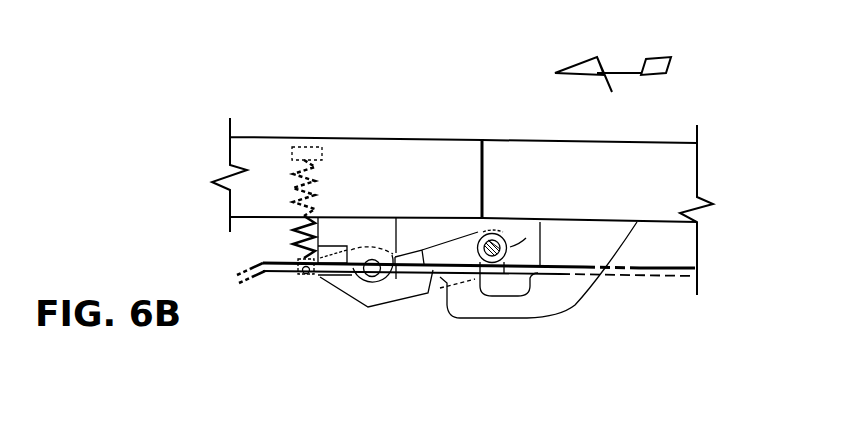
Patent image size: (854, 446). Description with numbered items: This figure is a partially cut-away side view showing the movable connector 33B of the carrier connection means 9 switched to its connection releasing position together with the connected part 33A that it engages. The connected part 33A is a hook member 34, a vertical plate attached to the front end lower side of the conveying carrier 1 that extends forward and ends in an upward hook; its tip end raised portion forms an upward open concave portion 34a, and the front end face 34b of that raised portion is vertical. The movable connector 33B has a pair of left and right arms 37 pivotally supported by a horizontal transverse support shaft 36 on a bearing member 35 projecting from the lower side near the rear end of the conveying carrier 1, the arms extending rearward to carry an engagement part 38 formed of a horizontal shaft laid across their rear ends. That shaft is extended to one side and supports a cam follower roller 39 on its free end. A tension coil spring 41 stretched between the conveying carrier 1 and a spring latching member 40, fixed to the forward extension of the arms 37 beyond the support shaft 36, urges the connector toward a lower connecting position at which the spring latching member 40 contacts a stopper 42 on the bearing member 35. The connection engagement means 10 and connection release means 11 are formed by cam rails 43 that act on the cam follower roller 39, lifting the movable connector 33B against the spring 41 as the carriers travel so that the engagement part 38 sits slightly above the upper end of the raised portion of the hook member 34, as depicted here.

The conveying carrier 1 is at (252, 137).
The carrier connection means 9 is at (477, 319).
The connected part 33A is at (483, 322).
The movable connector 33B is at (387, 312).
The connection engagement means 10 is at (466, 318).
The connection release means 11 is at (628, 282).
The hook member 34 is at (503, 305).
The upward open concave portion 34a is at (517, 272).
The front end face 34b is at (443, 291).
The bearing member 35 is at (380, 233).
The support shaft 36 is at (370, 258).
The arms 37 is at (404, 256).
The engagement part 38 is at (494, 233).
The cam follower roller 39 is at (524, 240).
The spring latching member 40 is at (298, 275).
The tension coil spring 41 is at (298, 237).
The stopper 42 is at (320, 272).
The cam rails 43 is at (648, 268).